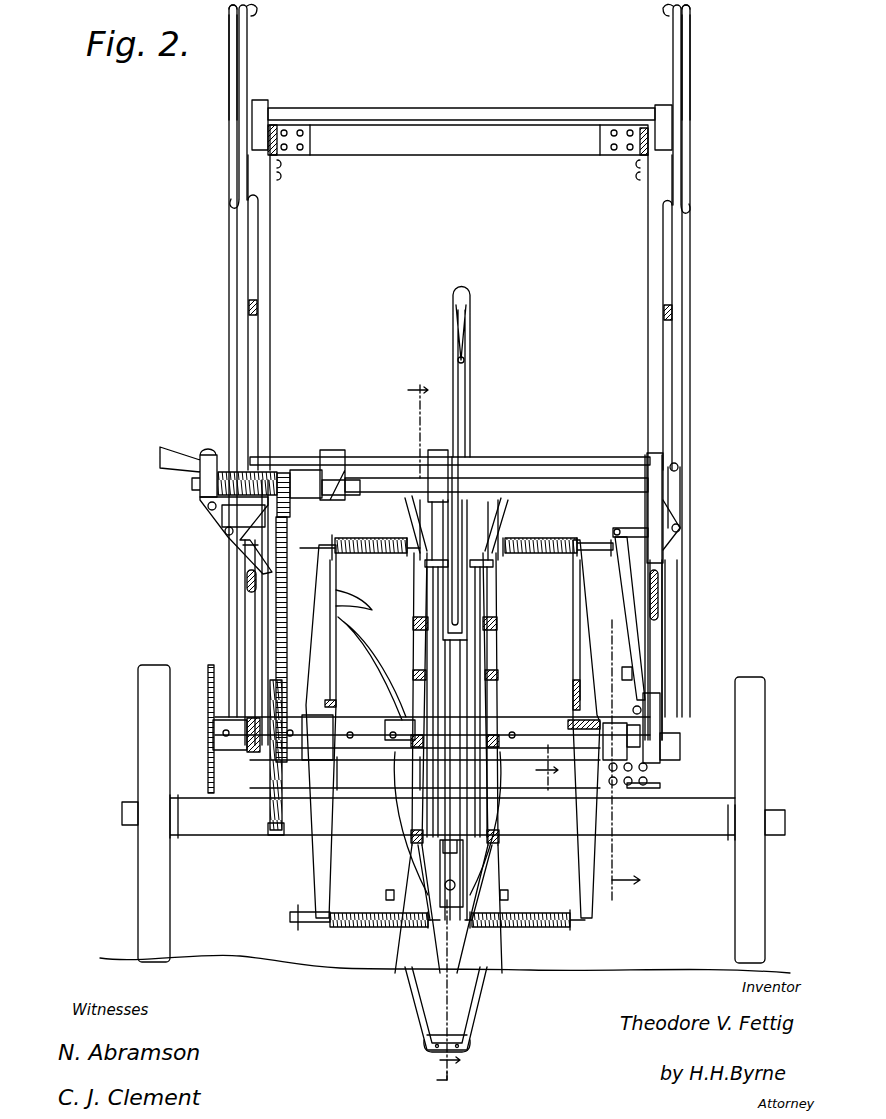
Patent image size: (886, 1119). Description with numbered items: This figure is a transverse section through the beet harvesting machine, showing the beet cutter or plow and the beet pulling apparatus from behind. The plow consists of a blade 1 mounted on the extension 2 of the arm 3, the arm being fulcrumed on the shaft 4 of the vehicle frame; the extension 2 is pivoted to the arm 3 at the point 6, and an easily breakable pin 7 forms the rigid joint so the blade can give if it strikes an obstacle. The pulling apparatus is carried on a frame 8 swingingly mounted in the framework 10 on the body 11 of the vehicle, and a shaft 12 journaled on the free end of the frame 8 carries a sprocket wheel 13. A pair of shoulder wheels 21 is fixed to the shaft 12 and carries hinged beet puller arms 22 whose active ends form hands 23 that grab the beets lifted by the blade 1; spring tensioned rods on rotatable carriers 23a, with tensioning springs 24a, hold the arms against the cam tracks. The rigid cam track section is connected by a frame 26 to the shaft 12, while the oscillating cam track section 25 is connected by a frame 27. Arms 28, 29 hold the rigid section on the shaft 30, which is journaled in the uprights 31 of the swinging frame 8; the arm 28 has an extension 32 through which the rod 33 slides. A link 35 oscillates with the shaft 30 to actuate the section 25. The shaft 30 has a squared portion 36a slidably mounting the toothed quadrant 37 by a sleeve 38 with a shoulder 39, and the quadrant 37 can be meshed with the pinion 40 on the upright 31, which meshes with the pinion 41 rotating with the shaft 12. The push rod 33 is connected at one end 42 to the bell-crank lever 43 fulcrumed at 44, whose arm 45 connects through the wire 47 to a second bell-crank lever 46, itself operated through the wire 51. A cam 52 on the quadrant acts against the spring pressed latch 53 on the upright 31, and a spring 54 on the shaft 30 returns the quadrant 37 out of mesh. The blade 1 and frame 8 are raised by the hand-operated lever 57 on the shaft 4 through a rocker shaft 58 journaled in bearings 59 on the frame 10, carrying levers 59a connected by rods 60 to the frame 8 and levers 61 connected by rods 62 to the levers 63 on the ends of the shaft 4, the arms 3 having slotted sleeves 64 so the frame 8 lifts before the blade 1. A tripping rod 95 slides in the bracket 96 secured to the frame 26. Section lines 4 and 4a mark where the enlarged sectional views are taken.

The blade 1 is at (462, 1040).
The extension 2 is at (482, 1002).
The arm 3 is at (520, 862).
The shaft 4 is at (483, 728).
The section line 4a is at (618, 760).
The pivot point 6 is at (386, 895).
The breakable pin 7 is at (392, 937).
The frame 8 is at (250, 628).
The framework 10 is at (486, 146).
The body 11 is at (645, 784).
The shaft 12 is at (432, 719).
The sprocket wheel 13 is at (208, 668).
The shoulder wheels 21 is at (428, 650).
The beet puller arms 22 is at (496, 580).
The hands 23 is at (420, 960).
The rotatable carriers 23a is at (340, 596).
The tensioning springs 24a is at (520, 548).
The cam track section 25 is at (466, 602).
The frame 26 is at (468, 672).
The frame 27 is at (470, 690).
The arm 28 is at (440, 512).
The arm 29 is at (486, 516).
The shaft 30 is at (520, 484).
The uprights 31 is at (246, 575).
The extension 32 is at (438, 452).
The rod 33 is at (378, 460).
The link 35 is at (420, 560).
The squared portion 36a is at (355, 494).
The toothed quadrant 37 is at (284, 500).
The sleeve 38 is at (306, 496).
The shoulder 39 is at (338, 458).
The pinion 40 is at (266, 548).
The pinion 41 is at (274, 812).
The rod end 42 is at (662, 468).
The bell-crank lever 43 is at (680, 478).
The fulcrum 44 is at (682, 528).
The arm 45 is at (632, 528).
The bell-crank lever 46 is at (630, 685).
The wire 47 is at (626, 585).
The wire 51 is at (627, 714).
The cam 52 is at (222, 515).
The latch 53 is at (240, 528).
The spring 54 is at (245, 474).
The hand-operated lever 57 is at (466, 410).
The rocker shaft 58 is at (486, 110).
The bearings 59 is at (268, 108).
The levers 59a is at (243, 172).
The rods 60 is at (258, 270).
The levers 61 is at (239, 62).
The rods 62 is at (228, 290).
The levers 63 is at (236, 646).
The sleeves 64 is at (540, 731).
The rod 95 is at (482, 886).
The bracket 96 is at (440, 872).